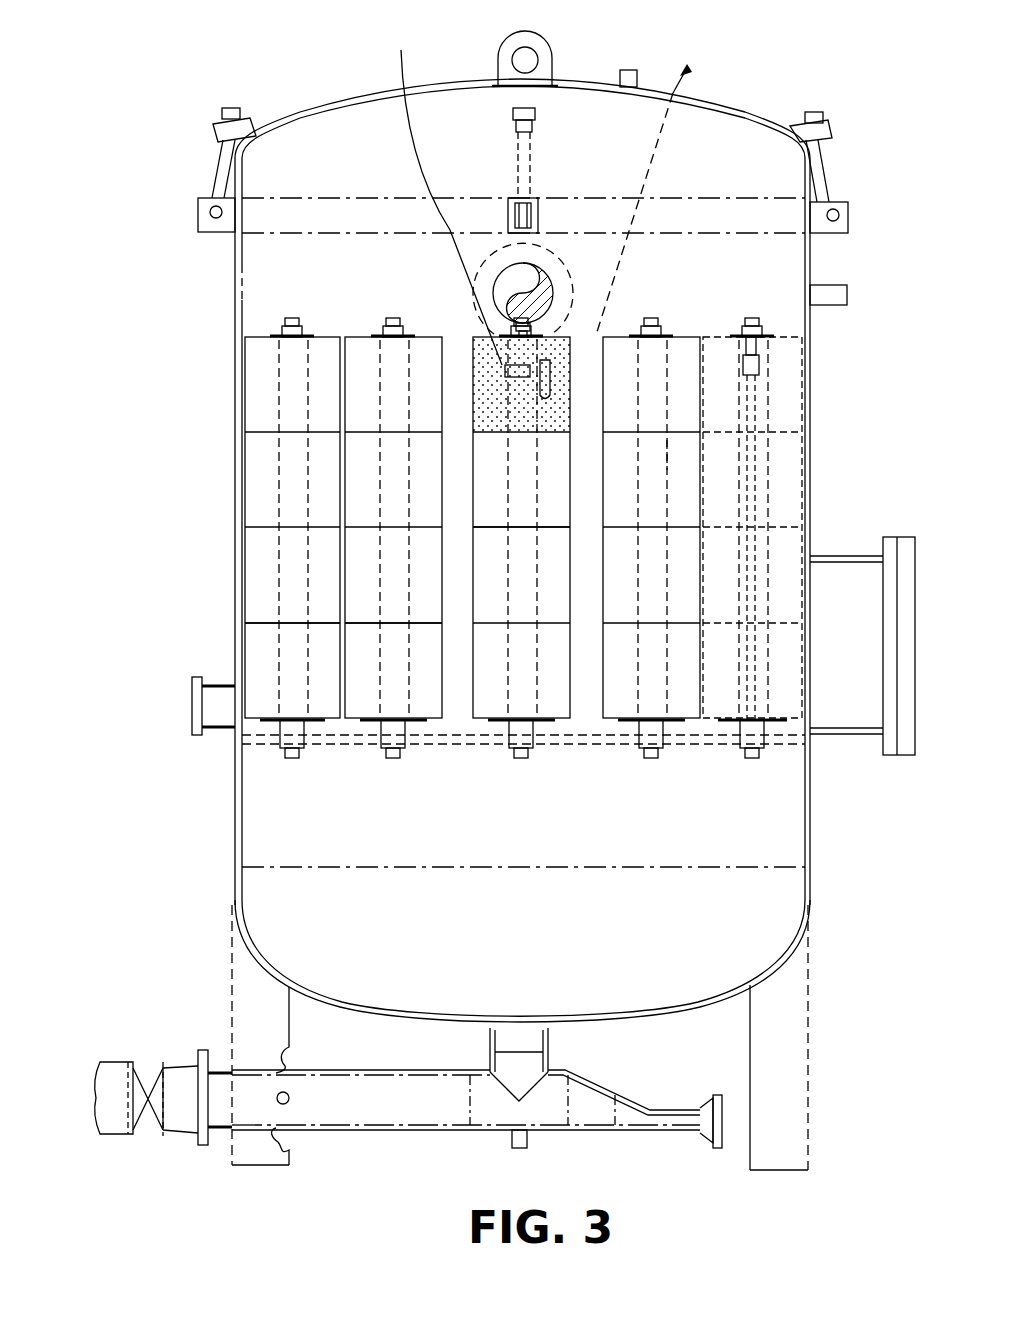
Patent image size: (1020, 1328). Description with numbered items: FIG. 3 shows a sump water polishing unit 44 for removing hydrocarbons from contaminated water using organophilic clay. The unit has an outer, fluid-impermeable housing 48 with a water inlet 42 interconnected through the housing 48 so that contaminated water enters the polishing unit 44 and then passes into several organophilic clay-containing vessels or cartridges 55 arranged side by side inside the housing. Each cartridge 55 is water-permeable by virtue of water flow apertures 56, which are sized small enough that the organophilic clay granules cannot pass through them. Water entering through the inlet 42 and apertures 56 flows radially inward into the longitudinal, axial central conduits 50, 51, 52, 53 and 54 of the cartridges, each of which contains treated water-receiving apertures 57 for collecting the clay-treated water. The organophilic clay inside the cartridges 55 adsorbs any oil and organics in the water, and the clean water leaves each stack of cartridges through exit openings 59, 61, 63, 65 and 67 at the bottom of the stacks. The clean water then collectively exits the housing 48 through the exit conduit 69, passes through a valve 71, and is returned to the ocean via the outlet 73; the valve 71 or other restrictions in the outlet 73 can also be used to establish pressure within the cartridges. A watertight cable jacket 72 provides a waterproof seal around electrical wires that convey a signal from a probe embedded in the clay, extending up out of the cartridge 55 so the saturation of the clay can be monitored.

The water inlet 42 is at (848, 288).
The sump water polishing unit 44 is at (222, 312).
The outer fluid-impermeable housing 48 is at (235, 252).
The central conduit 50 is at (770, 422).
The central conduit 51 is at (668, 452).
The central conduit 52 is at (535, 503).
The central conduit 53 is at (383, 603).
The central conduit 54 is at (280, 663).
The organophilic clay-containing cartridge 55 is at (290, 402).
The water flow apertures 56 is at (442, 192).
The treated water-receiving apertures 57 is at (522, 358).
The exit opening 59 is at (757, 760).
The exit opening 61 is at (656, 760).
The exit opening 63 is at (526, 760).
The exit opening 65 is at (398, 760).
The exit opening 67 is at (297, 760).
The exit conduit 69 is at (542, 1035).
The valve 71 is at (135, 1080).
The cable jacket 72 is at (688, 70).
The outlet 73 is at (100, 1062).